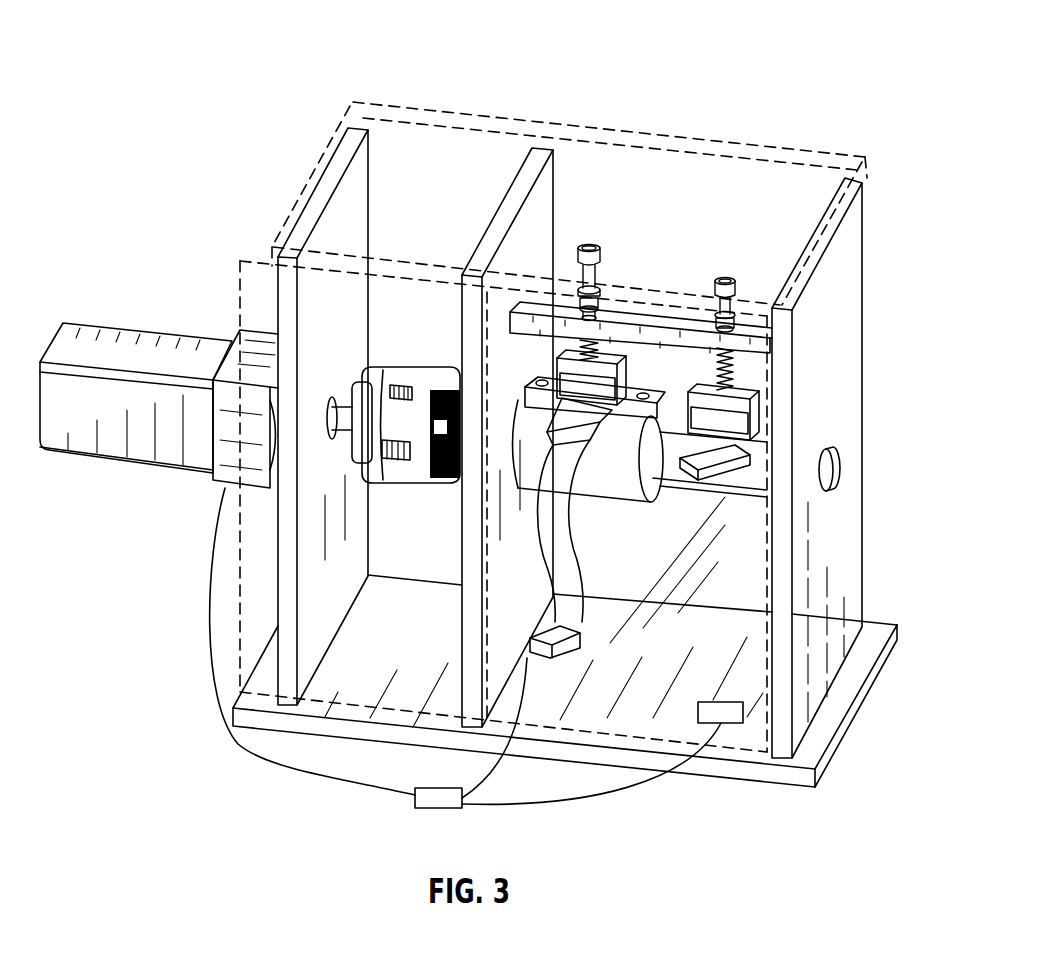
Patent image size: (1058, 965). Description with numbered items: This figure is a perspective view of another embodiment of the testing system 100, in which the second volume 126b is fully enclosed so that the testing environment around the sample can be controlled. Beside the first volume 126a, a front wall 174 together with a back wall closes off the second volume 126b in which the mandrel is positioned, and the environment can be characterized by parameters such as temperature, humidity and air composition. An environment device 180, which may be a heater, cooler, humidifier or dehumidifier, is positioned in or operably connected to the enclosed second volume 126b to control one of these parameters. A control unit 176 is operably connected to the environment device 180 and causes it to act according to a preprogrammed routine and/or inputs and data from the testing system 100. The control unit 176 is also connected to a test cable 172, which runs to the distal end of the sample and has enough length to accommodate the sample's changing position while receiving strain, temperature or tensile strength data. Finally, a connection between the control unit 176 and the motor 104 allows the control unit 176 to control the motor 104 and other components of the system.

The testing system 100 is at (806, 54).
The motor 104 is at (175, 335).
The first volume 126a is at (386, 197).
The second volume 126b is at (664, 230).
The test cable 172 is at (557, 553).
The front wall 174 is at (760, 598).
The control unit 176 is at (427, 808).
The environment device 180 is at (733, 723).